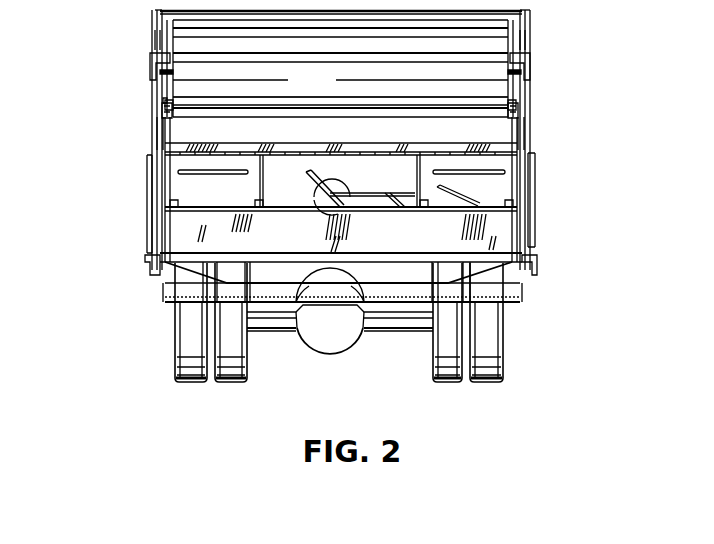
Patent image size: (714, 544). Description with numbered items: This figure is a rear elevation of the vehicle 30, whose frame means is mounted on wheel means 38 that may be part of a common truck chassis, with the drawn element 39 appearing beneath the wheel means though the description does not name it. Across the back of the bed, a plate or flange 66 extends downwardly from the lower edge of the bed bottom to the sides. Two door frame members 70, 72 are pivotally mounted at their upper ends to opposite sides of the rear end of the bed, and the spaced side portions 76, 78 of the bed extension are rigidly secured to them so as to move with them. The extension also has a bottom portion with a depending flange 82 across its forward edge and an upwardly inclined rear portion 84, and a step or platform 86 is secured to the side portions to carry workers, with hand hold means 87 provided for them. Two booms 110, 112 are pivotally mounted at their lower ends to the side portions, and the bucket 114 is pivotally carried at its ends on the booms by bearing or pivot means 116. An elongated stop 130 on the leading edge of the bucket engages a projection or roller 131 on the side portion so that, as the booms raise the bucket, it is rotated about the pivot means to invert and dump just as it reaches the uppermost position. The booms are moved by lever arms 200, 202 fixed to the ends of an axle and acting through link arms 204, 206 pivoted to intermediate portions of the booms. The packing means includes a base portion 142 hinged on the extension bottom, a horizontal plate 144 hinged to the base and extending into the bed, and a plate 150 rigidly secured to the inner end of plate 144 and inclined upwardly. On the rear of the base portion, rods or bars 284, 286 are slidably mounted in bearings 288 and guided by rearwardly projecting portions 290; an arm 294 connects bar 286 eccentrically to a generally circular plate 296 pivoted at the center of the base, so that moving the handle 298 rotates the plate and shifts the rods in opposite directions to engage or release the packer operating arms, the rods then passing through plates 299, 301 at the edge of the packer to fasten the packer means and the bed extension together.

The vehicle 30 is at (122, 163).
The wheel means 38 is at (236, 381).
The axle housing 39 is at (417, 322).
The plate or flange 66 is at (410, 276).
The door frame member 70 is at (152, 54).
The door frame member 72 is at (526, 54).
The side portion 76 is at (163, 32).
The side portion 78 is at (522, 32).
The depending flange 82 is at (403, 266).
The upwardly inclined rear portion 84 is at (272, 231).
The step or platform 86 is at (265, 300).
The hand hold means 87 is at (218, 165).
The boom 110 is at (160, 114).
The boom 112 is at (526, 118).
The bucket 114 is at (292, 79).
The bearing or pivot means 116 is at (160, 80).
The elongated stop 130 is at (172, 105).
The projection or roller 131 is at (162, 101).
The base portion 142 is at (382, 163).
The horizontal plate 144 is at (283, 142).
The plate 150 is at (395, 142).
The lever arm 200 is at (146, 271).
The lever arm 202 is at (533, 272).
The link arm 204 is at (150, 194).
The link arm 206 is at (536, 186).
The rod or bar 284 is at (250, 207).
The rod or bar 286 is at (477, 200).
The bearings 288 is at (172, 210).
The reinforcing flanges or projecting portions 290 is at (261, 176).
The arm 294 is at (396, 197).
The circular plate 296 is at (338, 209).
The handle 298 is at (311, 176).
The plate 299 is at (517, 177).
The plate 301 is at (165, 176).